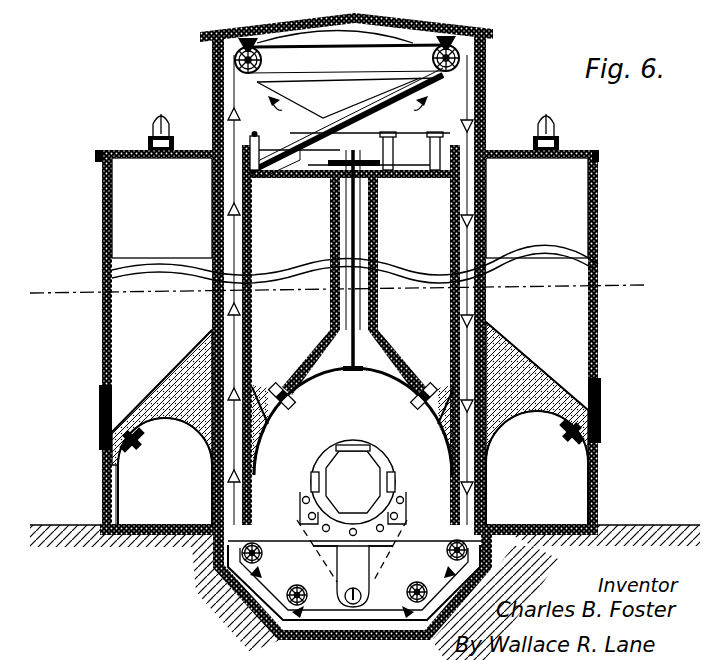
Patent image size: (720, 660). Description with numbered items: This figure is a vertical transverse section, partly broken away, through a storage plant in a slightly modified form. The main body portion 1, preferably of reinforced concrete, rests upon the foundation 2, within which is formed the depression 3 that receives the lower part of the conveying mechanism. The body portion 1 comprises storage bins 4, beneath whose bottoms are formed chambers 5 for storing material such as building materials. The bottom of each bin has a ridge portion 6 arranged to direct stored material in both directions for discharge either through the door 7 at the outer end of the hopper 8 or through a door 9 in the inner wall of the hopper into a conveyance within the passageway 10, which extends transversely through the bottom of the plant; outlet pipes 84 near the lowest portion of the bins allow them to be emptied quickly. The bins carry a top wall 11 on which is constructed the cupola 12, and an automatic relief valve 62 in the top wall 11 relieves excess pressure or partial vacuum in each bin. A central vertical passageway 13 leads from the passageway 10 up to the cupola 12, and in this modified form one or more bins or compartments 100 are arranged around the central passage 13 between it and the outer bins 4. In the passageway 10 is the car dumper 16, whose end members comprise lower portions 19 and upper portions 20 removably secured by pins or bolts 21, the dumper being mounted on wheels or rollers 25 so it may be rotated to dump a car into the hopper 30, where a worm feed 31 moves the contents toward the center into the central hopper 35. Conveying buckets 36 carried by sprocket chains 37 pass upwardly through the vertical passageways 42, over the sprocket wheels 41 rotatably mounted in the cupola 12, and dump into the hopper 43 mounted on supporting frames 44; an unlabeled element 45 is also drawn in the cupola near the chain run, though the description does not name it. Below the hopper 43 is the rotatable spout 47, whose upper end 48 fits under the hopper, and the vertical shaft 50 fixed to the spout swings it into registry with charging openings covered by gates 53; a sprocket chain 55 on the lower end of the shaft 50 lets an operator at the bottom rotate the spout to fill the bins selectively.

The main body portion 1 is at (102, 208).
The foundation 2 is at (122, 527).
The depression 3 is at (212, 577).
The storage bin 4 is at (125, 230).
The chamber 5 is at (353, 468).
The ridge portion 6 is at (205, 340).
The door 7 is at (100, 432).
The hopper 8 is at (182, 372).
The door 9 is at (292, 398).
The passageway 10 is at (353, 446).
The top wall 11 is at (120, 148).
The cupola 12 is at (212, 89).
The vertical passageway 13 is at (358, 211).
The car dumper 16 is at (300, 500).
The lower portion 19 is at (406, 497).
The upper portion 20 is at (345, 446).
The pin or bolt 21 is at (313, 474).
The wheel or roller 25 is at (312, 530).
The hopper 30 is at (352, 563).
The right hand worm feed 31 is at (358, 592).
The central hopper 35 is at (262, 596).
The conveying bucket 36 is at (452, 572).
The sprocket chain 37 is at (226, 239).
The sprocket wheel 41 is at (234, 55).
The vertical passageway 42 is at (212, 182).
The hopper 43 is at (346, 120).
The supporting frame 44 is at (346, 111).
The belt 45 is at (340, 50).
The rotatable spout 47 is at (295, 155).
The upper end 48 is at (338, 101).
The vertical shaft 50 is at (360, 292).
The gate 53 is at (446, 130).
The sprocket chain 55 is at (356, 372).
The automatic relief valve 62 is at (142, 134).
The outlet pipe 84 is at (140, 442).
The bin or compartment 100 is at (353, 297).